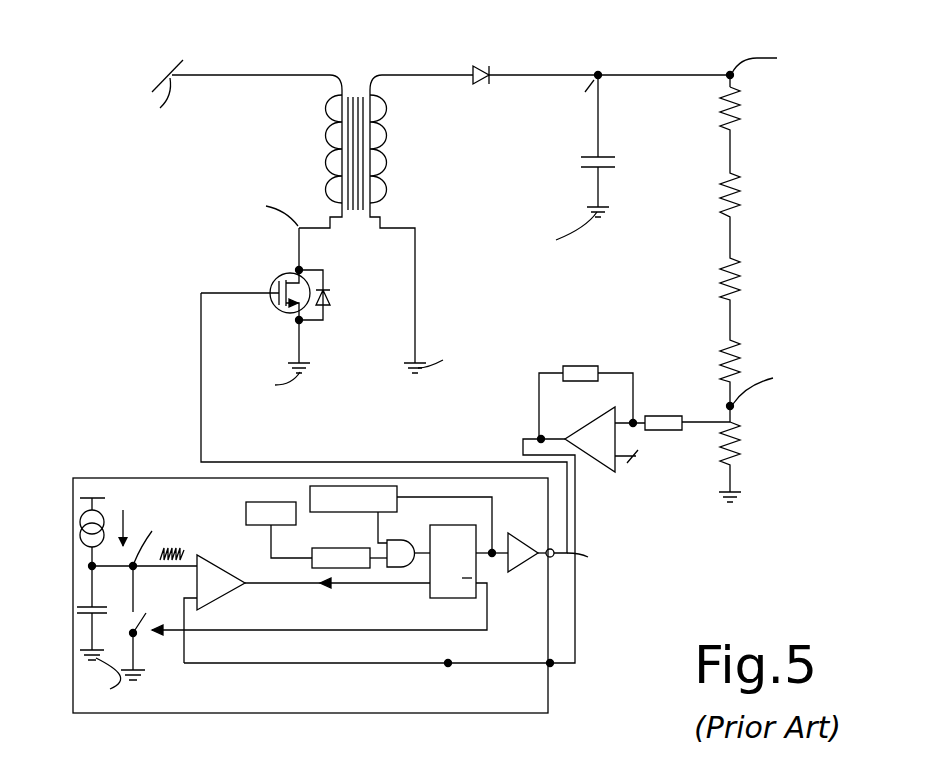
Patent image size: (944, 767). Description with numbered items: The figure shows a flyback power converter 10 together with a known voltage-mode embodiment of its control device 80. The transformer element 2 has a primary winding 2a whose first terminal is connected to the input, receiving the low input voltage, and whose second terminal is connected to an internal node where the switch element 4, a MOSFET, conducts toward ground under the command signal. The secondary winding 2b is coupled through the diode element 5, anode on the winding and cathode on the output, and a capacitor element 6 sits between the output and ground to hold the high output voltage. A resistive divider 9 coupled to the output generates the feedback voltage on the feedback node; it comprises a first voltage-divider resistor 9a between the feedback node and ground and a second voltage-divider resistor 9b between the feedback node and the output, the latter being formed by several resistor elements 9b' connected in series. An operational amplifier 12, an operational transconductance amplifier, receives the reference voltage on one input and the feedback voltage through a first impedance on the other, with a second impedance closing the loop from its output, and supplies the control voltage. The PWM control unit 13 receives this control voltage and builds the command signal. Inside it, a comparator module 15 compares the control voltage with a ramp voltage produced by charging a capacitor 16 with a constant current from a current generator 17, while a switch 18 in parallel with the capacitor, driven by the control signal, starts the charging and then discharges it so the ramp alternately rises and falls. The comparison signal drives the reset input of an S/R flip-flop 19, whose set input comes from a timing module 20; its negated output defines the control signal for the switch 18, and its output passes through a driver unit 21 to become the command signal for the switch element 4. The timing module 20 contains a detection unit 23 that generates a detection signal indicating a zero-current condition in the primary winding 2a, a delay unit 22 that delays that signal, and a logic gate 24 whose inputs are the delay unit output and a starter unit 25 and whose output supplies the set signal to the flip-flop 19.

The flyback converter 10 is at (95, 109).
The transformer element 2 is at (355, 70).
The primary winding 2a is at (326, 163).
The secondary winding 2b is at (386, 162).
The switch element 4 is at (275, 306).
The diode element 5 is at (478, 65).
The capacitor element 6 is at (580, 160).
The resistive divider 9 is at (700, 320).
The first voltage-divider resistor 9a is at (742, 450).
The second voltage-divider resistor 9b is at (786, 254).
The resistor elements 9b' is at (777, 254).
The operational amplifier 12 is at (600, 473).
The PWM control unit 13 is at (556, 677).
The comparator module 15 is at (205, 553).
The capacitor 16 is at (118, 598).
The current generator 17 is at (105, 523).
The switch 18 is at (140, 627).
The S/R flip-flop 19 is at (430, 597).
The timing module 20 is at (325, 589).
The driver unit 21 is at (516, 533).
The delay unit 22 is at (326, 548).
The detection unit 23 is at (246, 505).
The OR logic gate 24 is at (400, 545).
The starter unit 25 is at (366, 512).
The feedback control loop 80 is at (657, 545).